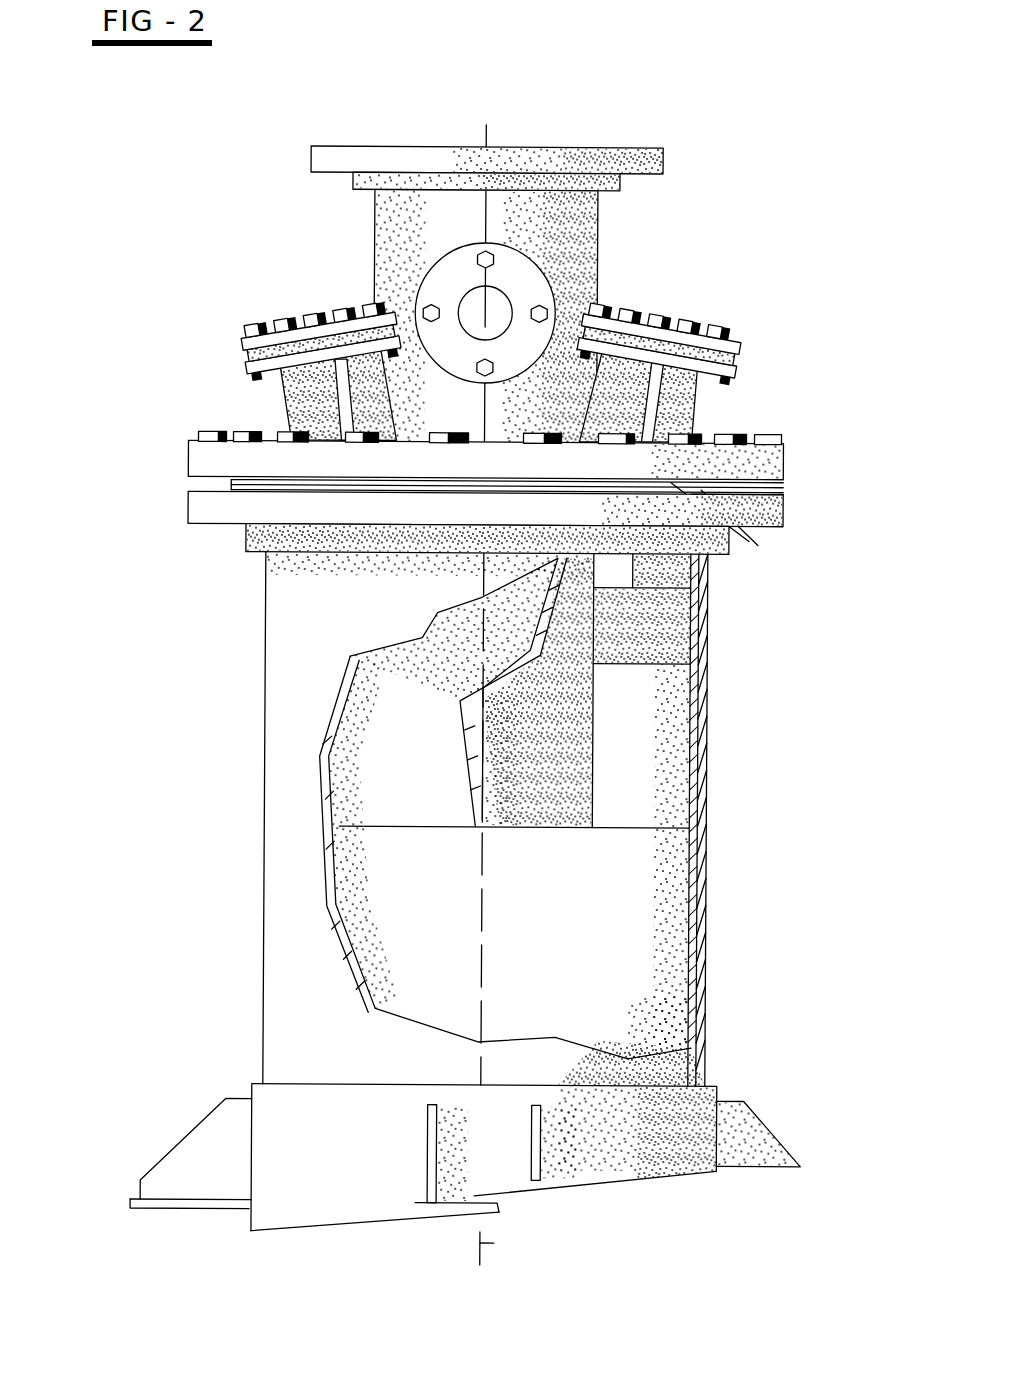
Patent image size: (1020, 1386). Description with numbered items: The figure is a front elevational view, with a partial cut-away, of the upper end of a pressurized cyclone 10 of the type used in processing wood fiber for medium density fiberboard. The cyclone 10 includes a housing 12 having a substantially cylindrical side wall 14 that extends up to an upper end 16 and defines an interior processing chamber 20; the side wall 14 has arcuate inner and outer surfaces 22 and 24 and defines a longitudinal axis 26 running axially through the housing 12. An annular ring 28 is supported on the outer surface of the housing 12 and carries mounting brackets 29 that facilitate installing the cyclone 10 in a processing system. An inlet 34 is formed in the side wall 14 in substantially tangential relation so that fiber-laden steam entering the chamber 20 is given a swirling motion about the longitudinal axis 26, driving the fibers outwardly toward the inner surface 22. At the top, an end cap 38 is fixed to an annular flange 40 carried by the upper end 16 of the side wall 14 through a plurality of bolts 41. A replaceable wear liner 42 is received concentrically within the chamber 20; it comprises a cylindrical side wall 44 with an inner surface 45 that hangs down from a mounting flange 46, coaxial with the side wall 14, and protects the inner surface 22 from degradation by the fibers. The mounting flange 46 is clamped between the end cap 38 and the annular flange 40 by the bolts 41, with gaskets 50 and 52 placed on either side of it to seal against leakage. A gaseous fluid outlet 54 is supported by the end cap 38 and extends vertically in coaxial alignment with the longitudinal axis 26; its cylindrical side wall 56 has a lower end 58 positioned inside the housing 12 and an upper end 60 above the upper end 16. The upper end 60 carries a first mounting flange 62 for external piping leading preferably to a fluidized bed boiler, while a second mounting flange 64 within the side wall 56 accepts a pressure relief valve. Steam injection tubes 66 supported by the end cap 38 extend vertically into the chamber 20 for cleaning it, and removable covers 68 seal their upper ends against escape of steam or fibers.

The pressurized cyclone 10 is at (735, 158).
The housing 12 is at (265, 740).
The side wall 14 is at (706, 753).
The upper end 16 is at (665, 258).
The interior processing chamber 20 is at (412, 990).
The inner surface 22 is at (578, 1010).
The outer surface 24 is at (277, 678).
The longitudinal axis 26 is at (528, 1247).
The annular ring 28 is at (318, 1203).
The mounting brackets 29 is at (432, 1157).
The inlet 34 is at (691, 624).
The end cap 38 is at (202, 458).
The annular flange 40 is at (198, 508).
The bolts 41 is at (545, 424).
The wear liner 42 is at (690, 695).
The cylindrical side wall 44 is at (694, 800).
The inner surface 45 is at (611, 759).
The mounting flange 46 is at (700, 489).
The gasket 50 is at (748, 541).
The gasket 52 is at (737, 495).
The gaseous fluid outlet 54 is at (598, 228).
The cylindrical side wall 56 is at (470, 774).
The lower end 58 is at (556, 842).
The upper end 60 is at (550, 136).
The first mounting flange 62 is at (662, 150).
The second mounting flange 64 is at (436, 300).
The steam injection tubes 66 is at (306, 409).
The removable covers 68 is at (345, 305).